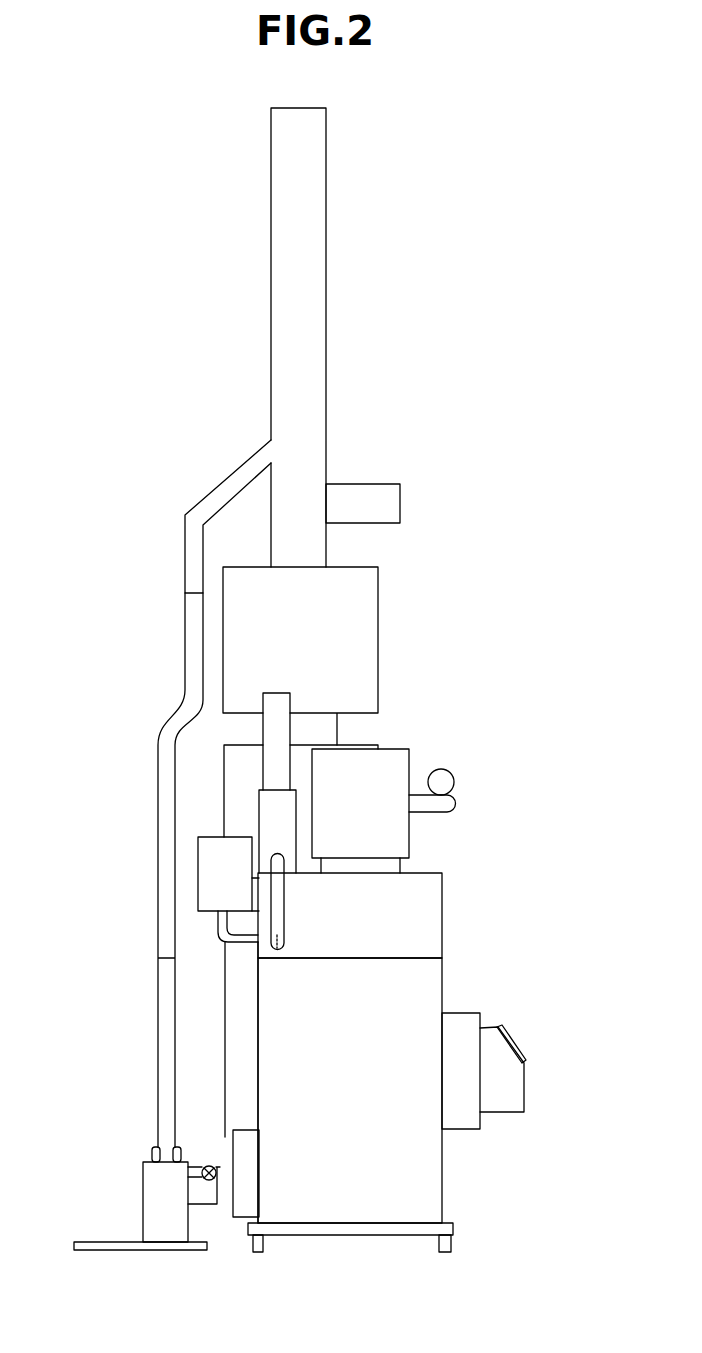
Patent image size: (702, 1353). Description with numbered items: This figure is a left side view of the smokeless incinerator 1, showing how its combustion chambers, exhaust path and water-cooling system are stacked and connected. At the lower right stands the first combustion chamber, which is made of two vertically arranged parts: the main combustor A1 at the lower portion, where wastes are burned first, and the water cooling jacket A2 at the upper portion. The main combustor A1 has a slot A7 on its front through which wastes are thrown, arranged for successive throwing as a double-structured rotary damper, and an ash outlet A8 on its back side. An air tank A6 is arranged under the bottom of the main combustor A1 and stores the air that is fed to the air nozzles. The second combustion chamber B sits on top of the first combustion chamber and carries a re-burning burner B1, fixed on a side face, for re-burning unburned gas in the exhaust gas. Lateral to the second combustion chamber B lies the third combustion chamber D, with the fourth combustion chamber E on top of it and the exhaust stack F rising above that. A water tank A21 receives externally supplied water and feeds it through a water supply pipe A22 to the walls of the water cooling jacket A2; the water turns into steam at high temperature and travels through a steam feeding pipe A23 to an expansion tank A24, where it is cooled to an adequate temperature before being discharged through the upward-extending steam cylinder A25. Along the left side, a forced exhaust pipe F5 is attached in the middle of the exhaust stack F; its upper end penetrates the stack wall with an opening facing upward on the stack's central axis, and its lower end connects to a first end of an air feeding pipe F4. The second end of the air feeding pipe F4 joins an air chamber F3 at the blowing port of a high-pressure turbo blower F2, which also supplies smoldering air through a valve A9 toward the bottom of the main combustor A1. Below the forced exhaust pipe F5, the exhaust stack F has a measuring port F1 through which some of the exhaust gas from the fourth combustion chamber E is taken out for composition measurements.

The smokeless incinerator 1 is at (105, 368).
The exhaust stack F is at (290, 363).
The measuring port F1 is at (367, 498).
The high-pressure turbo blower F2 is at (152, 1158).
The air chamber F3 is at (157, 1208).
The air feeding pipe F4 is at (194, 676).
The forced exhaust pipe F5 is at (232, 483).
The fourth combustion chamber E is at (285, 635).
The third combustion chamber D is at (236, 800).
The second combustion chamber B is at (348, 810).
The re-burning burner B1 is at (438, 803).
The main combustor A1 is at (339, 1103).
The water cooling jacket A2 is at (339, 927).
The water tank A21 is at (208, 887).
The water supply pipe A22 is at (220, 921).
The steam feeding pipe A23 is at (277, 953).
The expansion tank A24 is at (276, 818).
The steam cylinder A25 is at (274, 777).
The air tank A6 is at (419, 1229).
The slot A7 is at (496, 1079).
The ash outlet A8 is at (248, 1137).
The valve A9 is at (207, 1165).